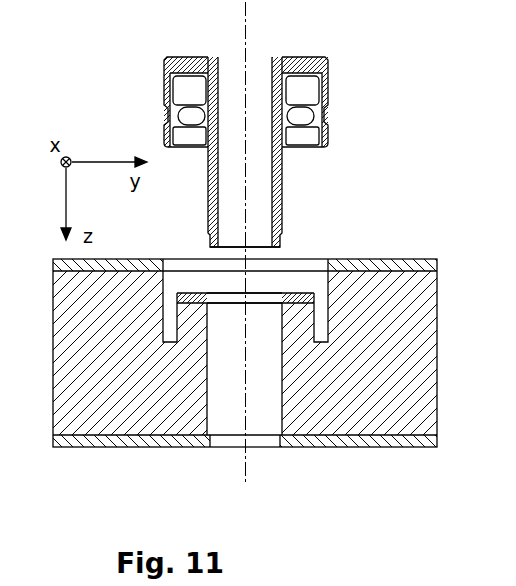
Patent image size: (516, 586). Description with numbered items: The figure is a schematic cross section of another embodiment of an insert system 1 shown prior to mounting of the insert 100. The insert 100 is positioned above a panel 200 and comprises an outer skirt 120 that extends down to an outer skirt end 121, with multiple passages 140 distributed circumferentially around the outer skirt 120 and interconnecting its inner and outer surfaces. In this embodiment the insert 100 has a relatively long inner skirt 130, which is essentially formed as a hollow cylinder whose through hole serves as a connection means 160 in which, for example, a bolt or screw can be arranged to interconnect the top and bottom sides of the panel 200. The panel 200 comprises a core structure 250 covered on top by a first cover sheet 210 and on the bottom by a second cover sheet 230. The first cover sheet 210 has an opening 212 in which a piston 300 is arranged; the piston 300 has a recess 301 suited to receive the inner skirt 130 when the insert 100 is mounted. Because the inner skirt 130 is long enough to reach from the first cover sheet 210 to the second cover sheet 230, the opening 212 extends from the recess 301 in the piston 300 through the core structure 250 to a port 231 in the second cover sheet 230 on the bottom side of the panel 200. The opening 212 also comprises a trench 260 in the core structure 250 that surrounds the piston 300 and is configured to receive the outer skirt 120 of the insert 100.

The insert system 1 is at (118, 29).
The insert 100 is at (328, 52).
The outer skirt 120 is at (327, 93).
The outer skirt end 121 is at (324, 137).
The inner skirt 130 is at (282, 193).
The passages 140 is at (326, 112).
The connection means 160 is at (230, 125).
The panel 200 is at (132, 474).
The first cover sheet 210 is at (403, 259).
The opening 212 is at (207, 233).
The second cover sheet 230 is at (337, 447).
The port 231 is at (250, 440).
The core structure 250 is at (388, 315).
The trench 260 is at (320, 323).
The piston 300 is at (315, 297).
The recess 301 is at (246, 290).